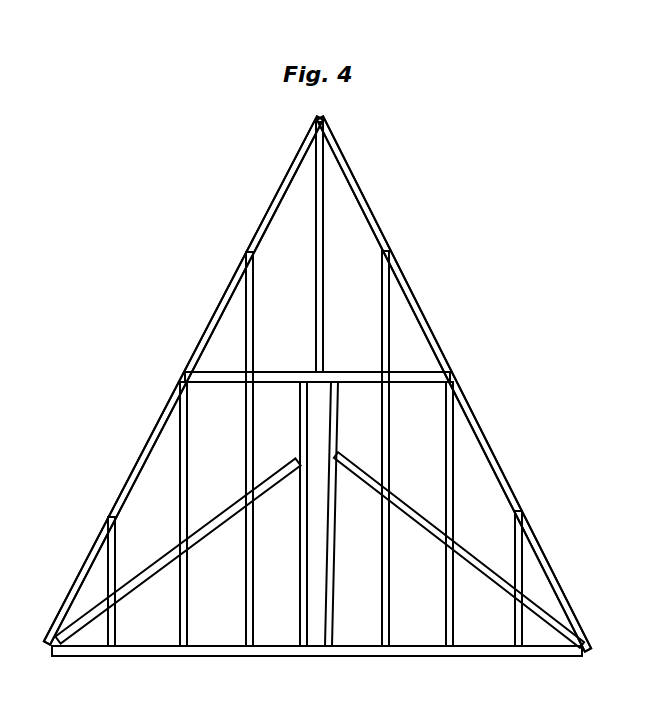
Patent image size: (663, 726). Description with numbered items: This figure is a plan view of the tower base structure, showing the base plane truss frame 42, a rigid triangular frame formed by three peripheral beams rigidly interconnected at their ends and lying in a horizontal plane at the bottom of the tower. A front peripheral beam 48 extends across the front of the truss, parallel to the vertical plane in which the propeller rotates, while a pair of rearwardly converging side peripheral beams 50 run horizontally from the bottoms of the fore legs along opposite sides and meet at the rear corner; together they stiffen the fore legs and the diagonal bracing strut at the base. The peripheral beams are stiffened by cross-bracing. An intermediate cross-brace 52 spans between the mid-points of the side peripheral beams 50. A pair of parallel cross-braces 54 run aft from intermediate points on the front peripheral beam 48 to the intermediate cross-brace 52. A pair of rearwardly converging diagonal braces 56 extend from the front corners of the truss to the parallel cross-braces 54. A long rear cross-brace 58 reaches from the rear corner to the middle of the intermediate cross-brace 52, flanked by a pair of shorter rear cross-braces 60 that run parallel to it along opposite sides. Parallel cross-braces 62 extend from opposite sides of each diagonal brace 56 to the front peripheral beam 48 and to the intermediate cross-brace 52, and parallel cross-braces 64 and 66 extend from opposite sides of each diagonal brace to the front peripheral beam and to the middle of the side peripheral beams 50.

The base plane truss frame 42 is at (158, 394).
The front peripheral beam 48 is at (313, 657).
The side peripheral beams 50 is at (226, 293).
The intermediate cross-brace 52 is at (272, 376).
The parallel cross-braces 54 is at (307, 577).
The diagonal braces 56 is at (240, 504).
The rear cross-brace 58 is at (324, 231).
The shorter rear cross-braces 60 is at (254, 307).
The parallel cross-braces 62 is at (253, 413).
The parallel cross-braces 64 is at (188, 600).
The parallel cross-braces 66 is at (118, 536).